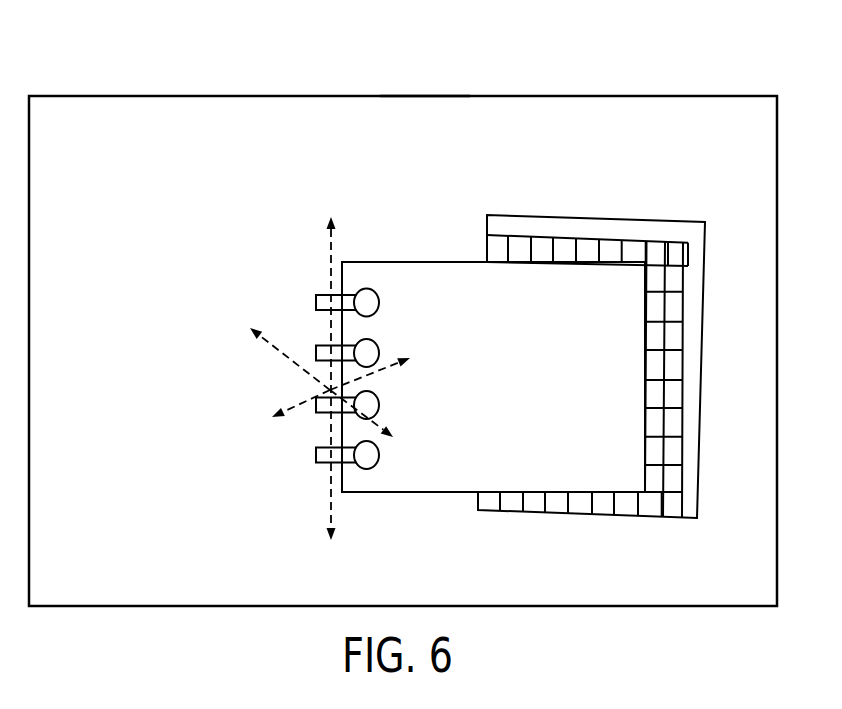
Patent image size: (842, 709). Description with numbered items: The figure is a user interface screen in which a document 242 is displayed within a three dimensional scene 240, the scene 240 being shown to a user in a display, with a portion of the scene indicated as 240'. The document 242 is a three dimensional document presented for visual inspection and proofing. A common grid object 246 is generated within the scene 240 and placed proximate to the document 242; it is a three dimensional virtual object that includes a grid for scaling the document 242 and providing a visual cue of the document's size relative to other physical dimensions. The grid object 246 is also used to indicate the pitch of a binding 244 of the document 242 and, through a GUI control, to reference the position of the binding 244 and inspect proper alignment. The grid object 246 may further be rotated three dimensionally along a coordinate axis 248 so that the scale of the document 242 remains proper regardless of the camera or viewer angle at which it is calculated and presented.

The three dimensional scene 240 is at (403, 309).
The upper side of device 240' is at (422, 113).
The document 242 is at (428, 482).
The binding 244 is at (306, 275).
The grid object 246 is at (522, 223).
The coordinate axis 248 is at (313, 222).